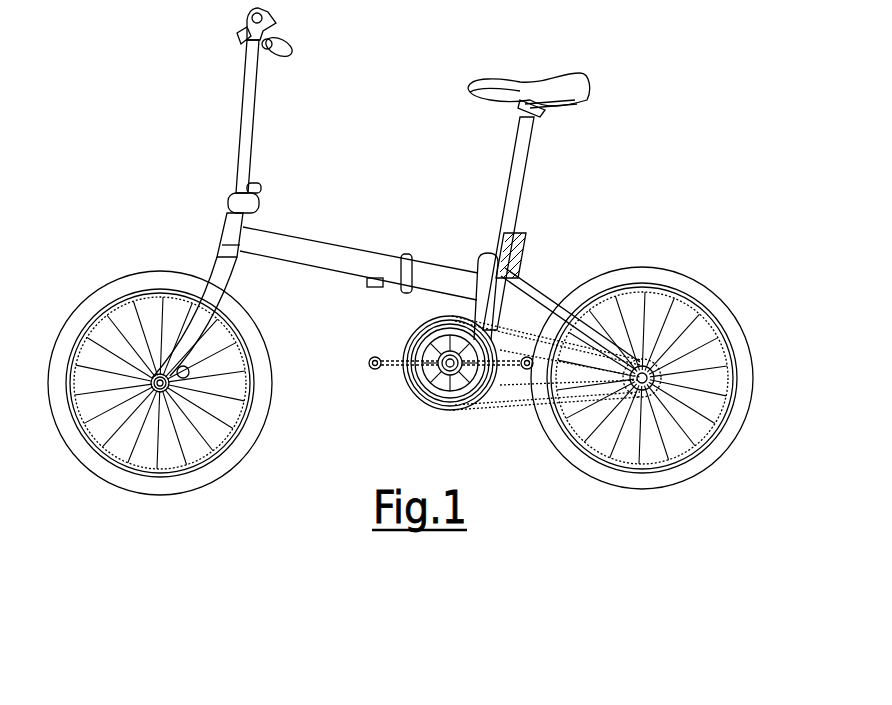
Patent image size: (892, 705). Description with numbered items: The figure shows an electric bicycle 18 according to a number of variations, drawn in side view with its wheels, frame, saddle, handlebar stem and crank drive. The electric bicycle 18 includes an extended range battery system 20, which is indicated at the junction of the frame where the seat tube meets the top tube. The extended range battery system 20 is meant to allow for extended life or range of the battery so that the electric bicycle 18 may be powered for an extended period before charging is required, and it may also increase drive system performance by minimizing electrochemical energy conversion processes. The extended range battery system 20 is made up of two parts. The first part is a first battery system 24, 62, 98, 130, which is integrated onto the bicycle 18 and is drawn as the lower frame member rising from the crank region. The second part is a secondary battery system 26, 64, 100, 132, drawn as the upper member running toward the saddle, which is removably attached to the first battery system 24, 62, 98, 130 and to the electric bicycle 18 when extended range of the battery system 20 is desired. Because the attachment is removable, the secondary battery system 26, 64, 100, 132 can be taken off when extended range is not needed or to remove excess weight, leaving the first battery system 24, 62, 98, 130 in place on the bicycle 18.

The electric bicycle 18 is at (414, 251).
The extended range battery system 20 is at (529, 275).
The first battery system 24 is at (627, 285).
The first battery system 62 is at (627, 285).
The first battery system 98 is at (627, 285).
The first battery system 130 is at (500, 288).
The secondary battery system 26 is at (631, 223).
The secondary battery system 64 is at (631, 223).
The secondary battery system 100 is at (631, 223).
The secondary battery system 132 is at (520, 233).